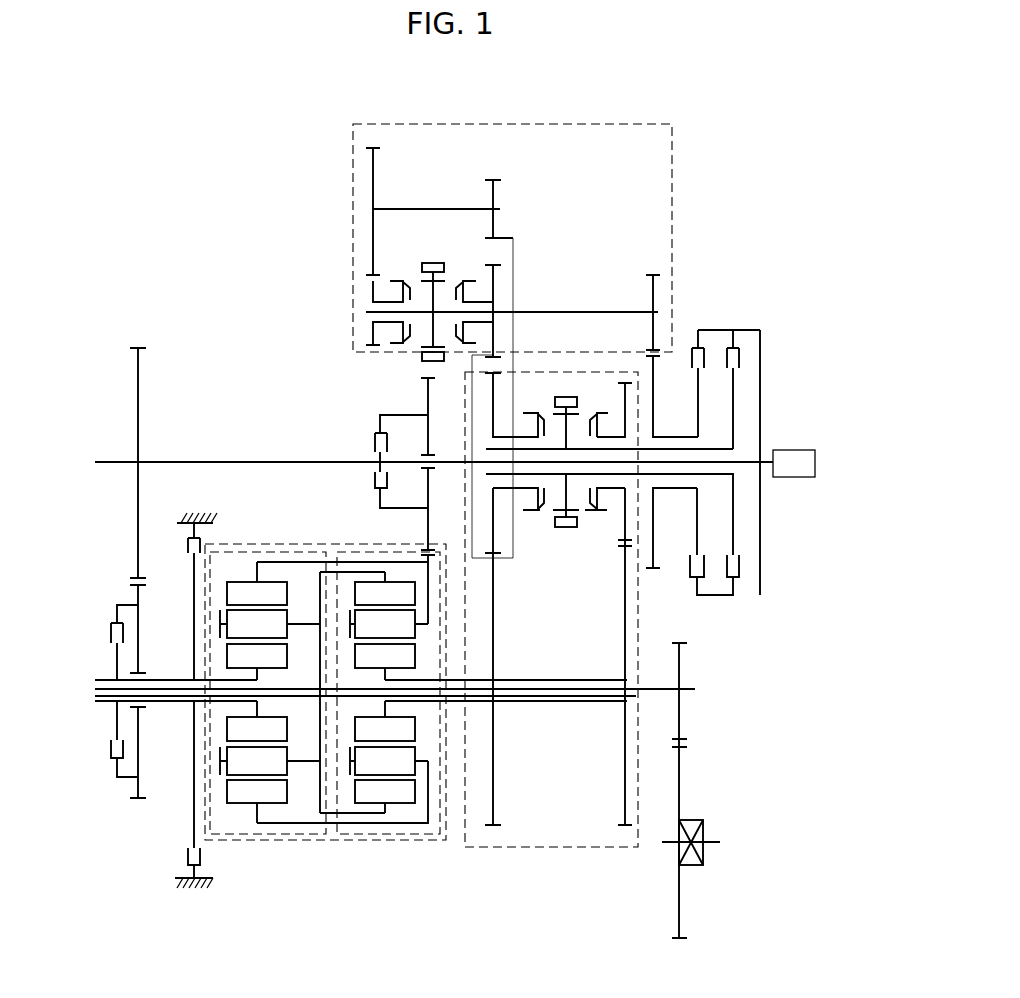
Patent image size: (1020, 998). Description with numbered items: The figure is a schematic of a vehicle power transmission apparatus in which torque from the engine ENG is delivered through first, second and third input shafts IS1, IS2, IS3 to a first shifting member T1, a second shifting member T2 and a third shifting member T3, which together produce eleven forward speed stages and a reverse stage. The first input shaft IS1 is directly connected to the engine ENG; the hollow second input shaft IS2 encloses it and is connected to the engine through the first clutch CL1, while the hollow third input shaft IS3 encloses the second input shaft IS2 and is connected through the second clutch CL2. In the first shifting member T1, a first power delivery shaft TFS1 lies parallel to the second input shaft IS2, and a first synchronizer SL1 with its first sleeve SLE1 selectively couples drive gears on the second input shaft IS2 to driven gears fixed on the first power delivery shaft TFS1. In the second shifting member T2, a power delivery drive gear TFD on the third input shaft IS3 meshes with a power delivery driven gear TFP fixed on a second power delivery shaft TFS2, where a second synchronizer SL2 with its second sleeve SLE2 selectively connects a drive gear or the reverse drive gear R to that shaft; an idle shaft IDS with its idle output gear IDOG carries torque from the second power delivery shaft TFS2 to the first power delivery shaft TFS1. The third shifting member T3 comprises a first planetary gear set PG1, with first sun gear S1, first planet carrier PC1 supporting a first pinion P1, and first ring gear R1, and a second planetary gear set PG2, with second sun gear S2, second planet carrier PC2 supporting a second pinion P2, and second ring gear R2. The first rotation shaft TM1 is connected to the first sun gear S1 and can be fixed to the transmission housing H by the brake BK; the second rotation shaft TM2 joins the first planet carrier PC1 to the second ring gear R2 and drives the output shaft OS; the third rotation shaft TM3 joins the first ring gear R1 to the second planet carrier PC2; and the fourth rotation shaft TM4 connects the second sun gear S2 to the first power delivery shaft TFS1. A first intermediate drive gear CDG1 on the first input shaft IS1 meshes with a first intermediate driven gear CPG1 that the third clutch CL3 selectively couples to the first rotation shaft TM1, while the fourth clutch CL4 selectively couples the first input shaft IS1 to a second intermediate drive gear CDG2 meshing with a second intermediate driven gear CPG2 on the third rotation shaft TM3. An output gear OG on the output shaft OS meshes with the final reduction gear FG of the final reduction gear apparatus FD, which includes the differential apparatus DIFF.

The first shifting member T1 is at (641, 598).
The second shifting member T2 is at (675, 146).
The third shifting member T3 is at (447, 841).
The first planetary gear set PG1 is at (271, 838).
The second planetary gear set PG2 is at (375, 838).
The idle shaft IDS is at (428, 206).
The idle output gear IDOG is at (500, 188).
The second sleeve SLE2 is at (425, 262).
The second synchronizer SL2 is at (441, 261).
The reverse drive gear R is at (497, 337).
The second power delivery shaft TFS2 is at (530, 311).
The power delivery driven gear TFP is at (651, 298).
The power delivery drive gear TFD is at (654, 422).
The first clutch CL1 is at (744, 345).
The second clutch CL2 is at (709, 345).
The engine ENG is at (455, 463).
The first input shaft IS1 is at (747, 463).
The second input shaft IS2 is at (718, 475).
The third input shaft IS3 is at (666, 489).
The first sleeve SLE1 is at (560, 530).
The first synchronizer SL1 is at (577, 531).
The first power delivery shaft TFS1 is at (592, 679).
The output shaft OS is at (573, 692).
The output gear OG is at (681, 700).
The final reduction gear FG is at (683, 746).
The final reduction gear apparatus FD is at (697, 727).
The differential apparatus DIFF is at (695, 866).
The first intermediate drive gear CDG1 is at (137, 490).
The first intermediate driven gear CPG1 is at (130, 583).
The third clutch CL3 is at (108, 622).
The transmission housing H is at (200, 513).
The brake BK is at (204, 538).
The first rotation shaft TM1 is at (191, 637).
The first sun gear S1 is at (226, 660).
The first pinion P1 is at (253, 692).
The first planet carrier PC1 is at (305, 626).
The first ring gear R1 is at (227, 587).
The third rotation shaft TM3 is at (356, 559).
The second rotation shaft TM2 is at (310, 582).
The second ring gear R2 is at (416, 593).
The second pinion P2 is at (382, 692).
The second planet carrier PC2 is at (432, 615).
The second sun gear S2 is at (416, 650).
The fourth rotation shaft TM4 is at (418, 677).
The second intermediate drive gear CDG2 is at (430, 548).
The second clutch planetary gear CPG2 is at (433, 558).
The fourth clutch CL4 is at (374, 436).